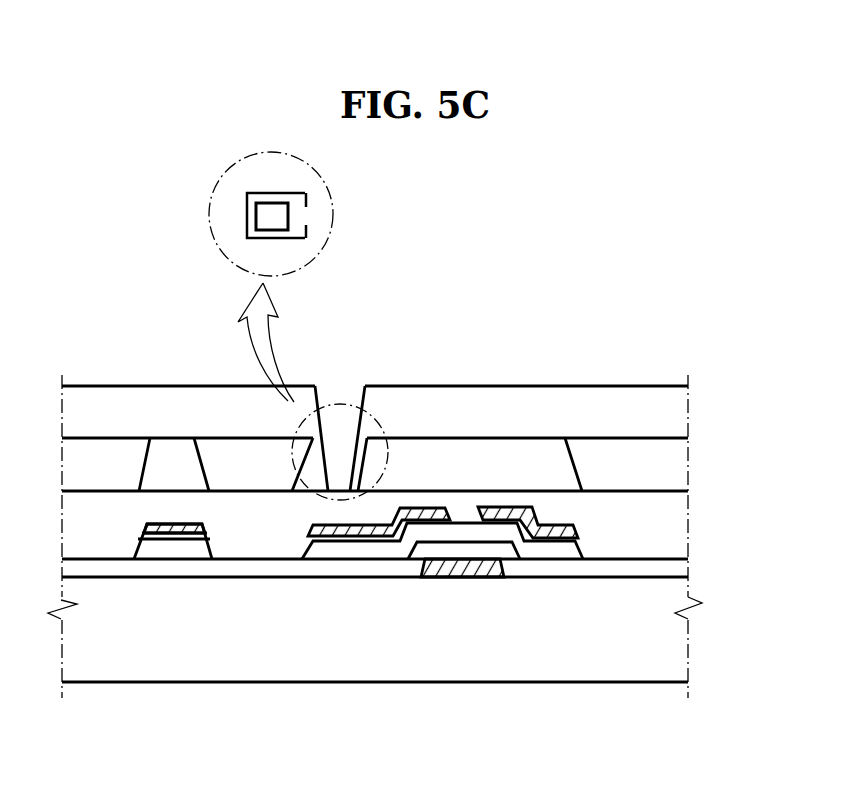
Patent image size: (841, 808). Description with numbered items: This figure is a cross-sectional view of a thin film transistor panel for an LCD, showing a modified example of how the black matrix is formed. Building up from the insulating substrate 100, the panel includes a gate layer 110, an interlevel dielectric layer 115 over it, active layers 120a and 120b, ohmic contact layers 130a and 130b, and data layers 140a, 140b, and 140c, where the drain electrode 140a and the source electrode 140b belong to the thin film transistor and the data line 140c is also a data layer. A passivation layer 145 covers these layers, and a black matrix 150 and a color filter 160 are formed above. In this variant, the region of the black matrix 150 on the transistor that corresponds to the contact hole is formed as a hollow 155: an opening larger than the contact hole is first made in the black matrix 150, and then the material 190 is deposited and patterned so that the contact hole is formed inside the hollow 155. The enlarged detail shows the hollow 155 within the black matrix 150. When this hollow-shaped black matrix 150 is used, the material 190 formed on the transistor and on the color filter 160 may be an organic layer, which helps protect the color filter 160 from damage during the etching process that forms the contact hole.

The insulating substrate 100 is at (675, 639).
The gate layer 110 is at (450, 577).
The interlevel dielectric layer 115 is at (675, 567).
The active layer 120a is at (567, 552).
The active layer 120b is at (148, 557).
The ohmic contact layer 130a is at (547, 548).
The ohmic contact layer 130b is at (173, 540).
The drain electrode 140a is at (408, 512).
The source electrode 140b is at (510, 505).
The data line 140c is at (190, 531).
The passivation layer 145 is at (675, 531).
The black matrix 150 is at (173, 447).
The hollow 155 is at (288, 214).
The color filter 160 is at (123, 443).
The organic layer 190 is at (375, 403).